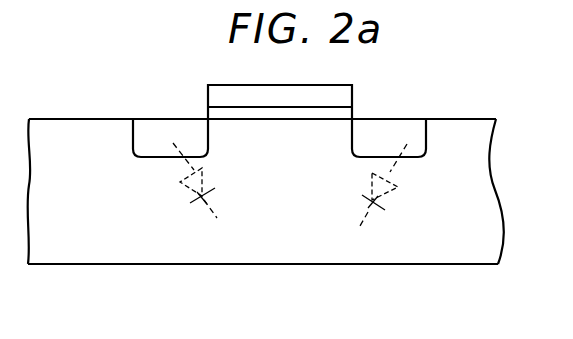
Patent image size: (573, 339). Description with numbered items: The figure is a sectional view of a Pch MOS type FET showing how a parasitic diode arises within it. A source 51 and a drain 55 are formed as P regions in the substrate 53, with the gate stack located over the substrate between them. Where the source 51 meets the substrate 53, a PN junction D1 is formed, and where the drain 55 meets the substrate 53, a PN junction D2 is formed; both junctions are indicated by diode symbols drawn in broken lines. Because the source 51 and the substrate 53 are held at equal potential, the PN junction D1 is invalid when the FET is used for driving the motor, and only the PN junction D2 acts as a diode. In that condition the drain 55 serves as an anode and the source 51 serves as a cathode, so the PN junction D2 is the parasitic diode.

The source 51 is at (187, 127).
The substrate 53 is at (92, 128).
The drain 55 is at (368, 128).
The PN junction D1 is at (206, 180).
The PN junction D2 is at (390, 185).